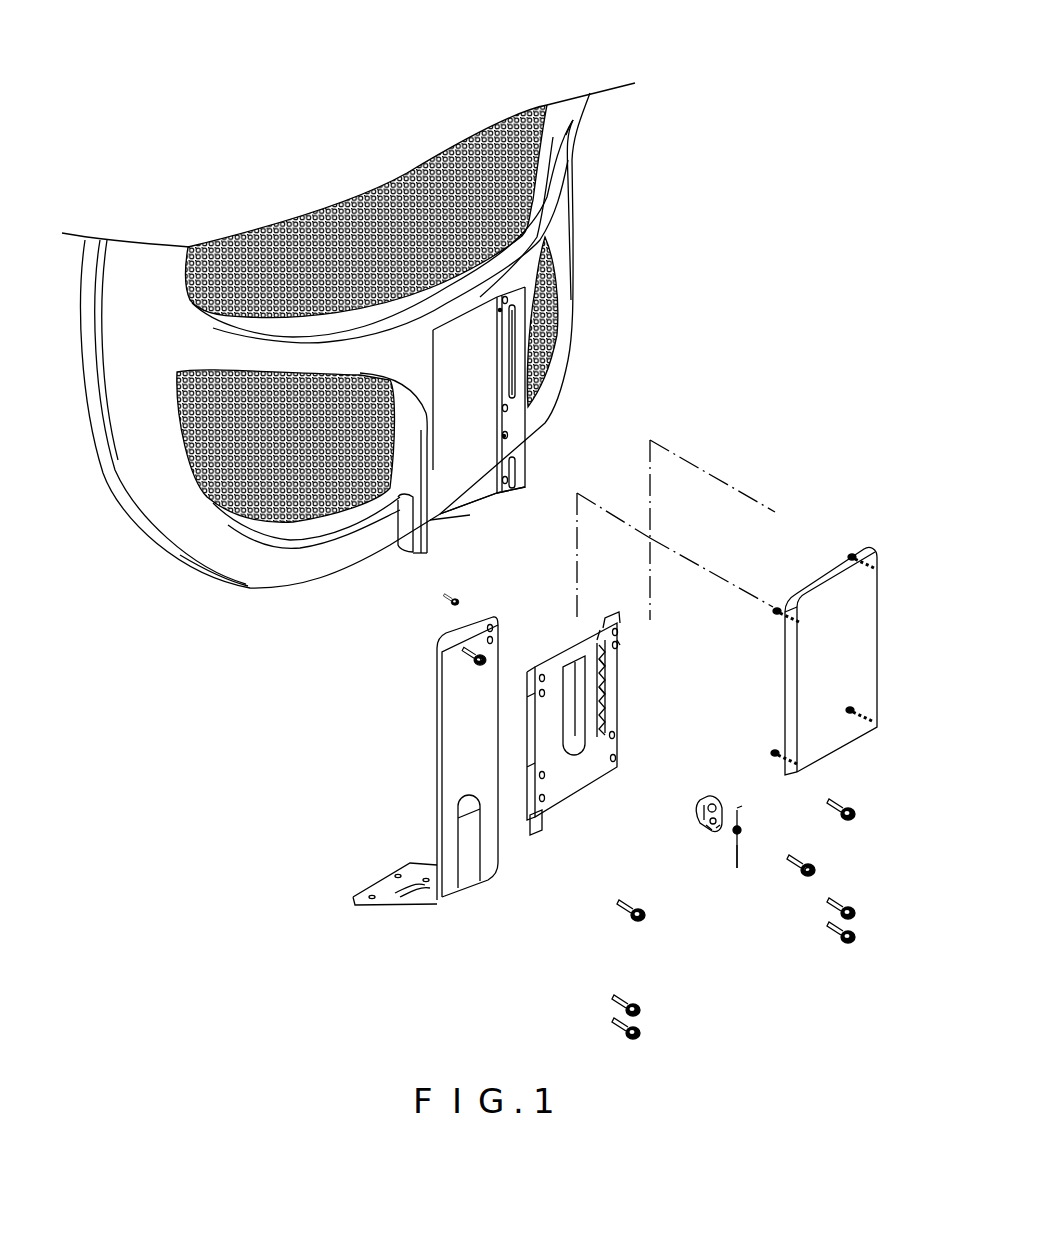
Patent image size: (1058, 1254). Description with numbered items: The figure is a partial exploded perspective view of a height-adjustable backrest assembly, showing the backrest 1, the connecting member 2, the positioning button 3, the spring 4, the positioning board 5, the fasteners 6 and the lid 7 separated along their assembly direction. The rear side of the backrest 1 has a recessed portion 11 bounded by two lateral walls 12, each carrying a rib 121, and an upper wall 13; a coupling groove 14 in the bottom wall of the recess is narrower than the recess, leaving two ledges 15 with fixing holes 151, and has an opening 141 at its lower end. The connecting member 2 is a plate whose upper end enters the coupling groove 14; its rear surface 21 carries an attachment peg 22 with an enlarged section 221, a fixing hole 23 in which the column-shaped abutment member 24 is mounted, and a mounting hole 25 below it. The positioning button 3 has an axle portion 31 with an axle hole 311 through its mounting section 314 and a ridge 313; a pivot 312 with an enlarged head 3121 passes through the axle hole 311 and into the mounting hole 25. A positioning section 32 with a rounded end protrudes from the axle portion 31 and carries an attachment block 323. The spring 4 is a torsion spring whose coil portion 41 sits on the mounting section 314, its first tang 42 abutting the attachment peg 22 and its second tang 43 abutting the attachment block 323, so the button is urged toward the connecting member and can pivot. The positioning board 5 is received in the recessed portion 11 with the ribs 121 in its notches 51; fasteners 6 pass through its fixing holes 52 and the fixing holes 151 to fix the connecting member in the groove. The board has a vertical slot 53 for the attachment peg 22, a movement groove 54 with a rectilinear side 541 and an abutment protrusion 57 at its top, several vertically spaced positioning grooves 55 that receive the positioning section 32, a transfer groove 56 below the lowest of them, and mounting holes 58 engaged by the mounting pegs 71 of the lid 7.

The backrest 1 is at (608, 150).
The recessed portion 11 is at (462, 362).
The lateral wall 12 is at (527, 300).
The rib 121 is at (515, 340).
The upper wall 13 is at (548, 243).
The coupling groove 14 is at (462, 425).
The opening 141 is at (470, 513).
The ledge 15 is at (503, 470).
The fixing hole 151 is at (507, 437).
The connecting member 2 is at (406, 761).
The rear surface 21 is at (465, 733).
The attachment peg 22 is at (470, 655).
The enlarged section 221 is at (478, 663).
The fixing hole 23 is at (488, 624).
The abutment member 24 is at (445, 602).
The mounting hole 25 is at (493, 638).
The positioning button 3 is at (688, 817).
The axle portion 31 is at (702, 815).
The axle hole 311 is at (717, 810).
The pivot 312 is at (805, 865).
The enlarged head 3121 is at (812, 870).
The ridge 313 is at (712, 825).
The mounting section 314 is at (700, 820).
The positioning section 32 is at (700, 800).
The attachment block 323 is at (716, 800).
The spring 4 is at (758, 869).
The coil portion 41 is at (745, 838).
The first tang 42 is at (740, 875).
The second tang 43 is at (742, 820).
The positioning board 5 is at (578, 780).
The notch 51 is at (525, 780).
The fixing hole 52 is at (615, 735).
The slot 53 is at (575, 755).
The movement groove 54 is at (598, 700).
The rectilinear side 541 is at (600, 690).
The positioning groove 55 is at (608, 665).
The transfer groove 56 is at (616, 762).
The abutment protrusion 57 is at (598, 630).
The mounting hole 58 is at (620, 640).
The fastener 6 is at (620, 1005).
The lid 7 is at (830, 608).
The mounting peg 71 is at (783, 610).